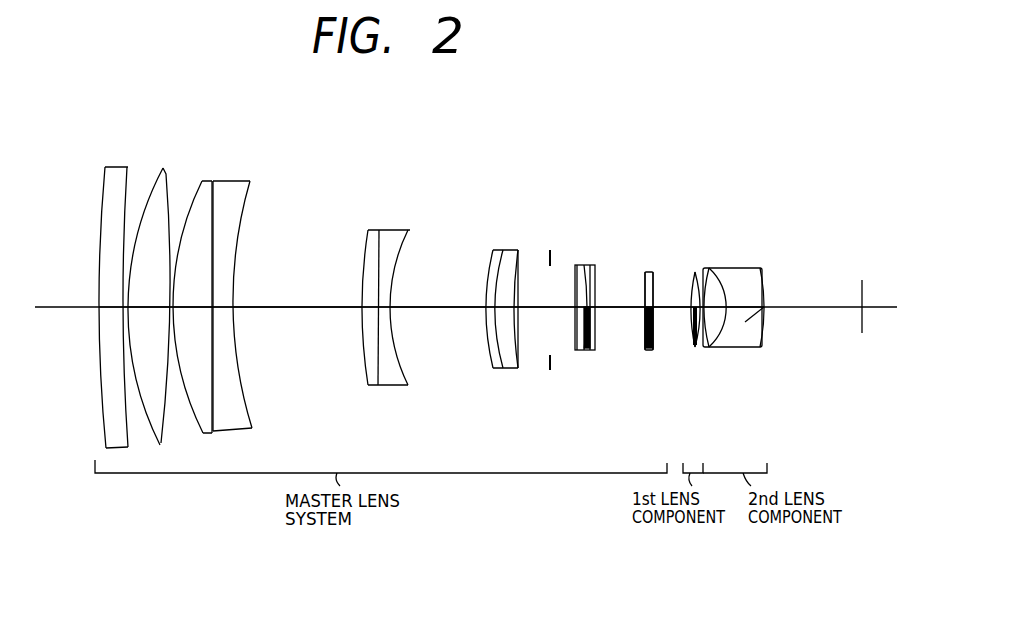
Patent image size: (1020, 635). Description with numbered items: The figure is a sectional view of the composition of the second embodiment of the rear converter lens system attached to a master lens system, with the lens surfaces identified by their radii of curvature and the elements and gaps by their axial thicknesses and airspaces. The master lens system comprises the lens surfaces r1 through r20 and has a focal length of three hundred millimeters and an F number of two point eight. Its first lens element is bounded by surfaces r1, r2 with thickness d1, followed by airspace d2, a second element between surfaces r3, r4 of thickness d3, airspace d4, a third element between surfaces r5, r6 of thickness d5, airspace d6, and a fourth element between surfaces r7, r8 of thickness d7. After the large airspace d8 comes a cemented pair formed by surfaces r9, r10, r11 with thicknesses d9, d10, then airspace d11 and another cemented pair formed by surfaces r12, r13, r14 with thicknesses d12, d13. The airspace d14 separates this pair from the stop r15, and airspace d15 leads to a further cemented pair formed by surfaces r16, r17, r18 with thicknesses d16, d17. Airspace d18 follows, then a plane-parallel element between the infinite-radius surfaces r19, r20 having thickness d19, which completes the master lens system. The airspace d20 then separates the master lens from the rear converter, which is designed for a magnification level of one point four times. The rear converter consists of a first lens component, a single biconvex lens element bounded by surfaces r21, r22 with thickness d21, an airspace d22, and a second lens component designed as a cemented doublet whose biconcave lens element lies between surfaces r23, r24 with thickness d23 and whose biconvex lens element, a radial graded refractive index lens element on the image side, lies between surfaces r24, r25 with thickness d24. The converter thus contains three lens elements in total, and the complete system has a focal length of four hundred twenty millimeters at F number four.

The radius of curvature of first surface r1 is at (104, 190).
The radius of curvature of second surface r2 is at (120, 167).
The radius of curvature of third surface r3 is at (153, 190).
The radius of curvature of fourth surface r4 is at (165, 168).
The radius of curvature of fifth surface r5 is at (196, 196).
The radius of curvature of sixth surface r6 is at (201, 184).
The radius of curvature of seventh surface r7 is at (214, 187).
The radius of curvature of eighth surface r8 is at (243, 182).
The radius of curvature of ninth surface r9 is at (368, 248).
The radius of curvature of tenth surface r10 is at (378, 230).
The radius of curvature of eleventh surface r11 is at (404, 230).
The radius of curvature of twelfth surface r12 is at (486, 262).
The radius of curvature of thirteenth surface r13 is at (501, 249).
The radius of curvature of fourteenth surface r14 is at (519, 263).
The stop r15 is at (550, 262).
The radius of curvature of sixteenth surface r16 is at (577, 278).
The radius of curvature of seventeenth surface r17 is at (583, 267).
The radius of curvature of eighteenth surface r18 is at (597, 282).
The radius of curvature of nineteenth surface r19 is at (645, 285).
The radius of curvature of twentieth surface r20 is at (653, 285).
The radius of curvature of twenty-first surface r21 is at (691, 273).
The radius of curvature of twenty-second surface r22 is at (696, 274).
The radius of curvature of twenty-third surface r23 is at (712, 268).
The radius of curvature of twenty-fourth surface r24 is at (716, 270).
The radius of curvature of twenty-fifth surface r25 is at (762, 268).
The thickness of first lens element d1 is at (108, 309).
The airspace between first and second lens elements d2 is at (124, 310).
The thickness of second lens element d3 is at (147, 310).
The airspace between second and third lens elements d4 is at (167, 307).
The thickness of third lens element d5 is at (190, 310).
The airspace between third and fourth lens elements d6 is at (213, 300).
The thickness of fourth lens element d7 is at (230, 310).
The airspace between fourth and fifth lens elements d8 is at (301, 311).
The thickness of fifth lens element d9 is at (367, 311).
The thickness of sixth lens element d10 is at (390, 311).
The airspace between sixth and seventh lens elements d11 is at (442, 311).
The thickness of seventh lens element d12 is at (481, 317).
The thickness of eighth lens element d13 is at (510, 345).
The airspace between eighth lens element and stop d14 is at (528, 317).
The airspace between stop and ninth lens element d15 is at (568, 310).
The thickness of ninth lens element d16 is at (577, 348).
The thickness of tenth lens element d17 is at (593, 325).
The airspace between tenth and eleventh lens elements d18 is at (607, 310).
The thickness of eleventh lens element d19 is at (647, 350).
The airspace between master lens system and first lens component d20 is at (670, 310).
The thickness of first lens component d21 is at (695, 345).
The airspace between first and second lens components d22 is at (703, 307).
The thickness of biconcave lens element d23 is at (728, 327).
The thickness of graded refractive index lens element d24 is at (745, 322).